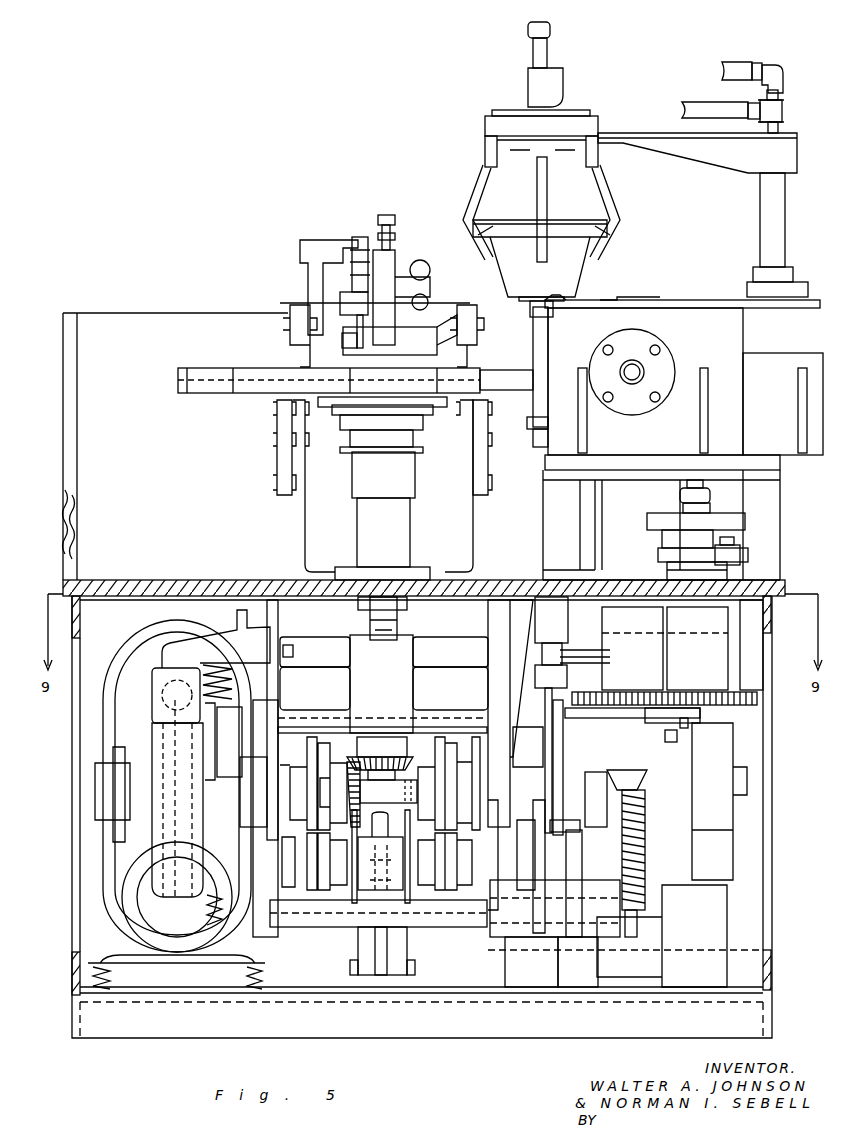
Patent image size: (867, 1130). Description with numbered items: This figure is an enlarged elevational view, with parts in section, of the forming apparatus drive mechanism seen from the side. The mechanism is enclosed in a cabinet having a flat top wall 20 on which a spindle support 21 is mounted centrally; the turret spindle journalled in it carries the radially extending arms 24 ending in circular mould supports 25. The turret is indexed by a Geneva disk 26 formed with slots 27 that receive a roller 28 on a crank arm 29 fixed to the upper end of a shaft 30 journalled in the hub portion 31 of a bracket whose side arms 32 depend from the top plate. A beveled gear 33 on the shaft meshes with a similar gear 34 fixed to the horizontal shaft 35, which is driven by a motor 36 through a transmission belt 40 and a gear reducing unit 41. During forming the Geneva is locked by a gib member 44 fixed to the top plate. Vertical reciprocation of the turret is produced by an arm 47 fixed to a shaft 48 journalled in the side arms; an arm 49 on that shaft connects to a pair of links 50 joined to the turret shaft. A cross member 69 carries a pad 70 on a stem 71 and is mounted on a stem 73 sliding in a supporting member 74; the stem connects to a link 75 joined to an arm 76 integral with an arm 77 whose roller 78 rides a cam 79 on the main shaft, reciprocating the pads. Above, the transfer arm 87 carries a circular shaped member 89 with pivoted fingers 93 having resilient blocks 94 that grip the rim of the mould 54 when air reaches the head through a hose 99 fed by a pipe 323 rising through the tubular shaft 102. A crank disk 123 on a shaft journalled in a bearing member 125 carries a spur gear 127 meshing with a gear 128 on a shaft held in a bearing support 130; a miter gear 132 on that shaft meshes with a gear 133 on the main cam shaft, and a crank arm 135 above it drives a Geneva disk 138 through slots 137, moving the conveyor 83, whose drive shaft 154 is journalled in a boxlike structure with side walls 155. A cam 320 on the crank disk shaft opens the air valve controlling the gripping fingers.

The top wall 20 is at (190, 586).
The spindle support 21 is at (382, 488).
The radially extending arms 24 is at (268, 365).
The circular mould supports 25 is at (178, 380).
The Geneva disk 26 is at (310, 702).
The slots 27 is at (330, 708).
The roller 28 is at (385, 640).
The crank arm 29 is at (370, 620).
The shaft 30 is at (390, 784).
The hub portion 31 is at (383, 684).
The side arms 32 is at (272, 621).
The beveled gear 33 is at (380, 758).
The gear 34 is at (361, 799).
The shaft 35 is at (280, 795).
The motor 36 is at (177, 897).
The transmission belt 40 is at (120, 845).
The gear reducing unit 41 is at (152, 730).
The gib member 44 is at (293, 651).
The arm 47 is at (540, 870).
The shaft 48 is at (378, 913).
The arm 49 is at (390, 947).
The links 50 is at (358, 938).
The mould 54 is at (578, 268).
The cross member 69 is at (530, 433).
The pad 70 is at (528, 298).
The stem 71 is at (533, 345).
The stem 73 is at (590, 655).
The supporting member 74 is at (551, 642).
The link 75 is at (548, 690).
The arm 76 is at (555, 935).
The arm 77 is at (582, 870).
The roller 78 is at (580, 825).
The cam 79 is at (563, 742).
The conveyor 83 is at (680, 298).
The arm 87 is at (697, 153).
The circular shaped member 89 is at (485, 127).
The fingers 93 is at (480, 187).
The blocks 94 is at (480, 223).
The hose 99 is at (740, 64).
The tubular shaft 102 is at (760, 212).
The crank disk 123 is at (652, 515).
The bearing member 125 is at (697, 648).
The spur gear 127 is at (752, 690).
The gear 128 is at (606, 698).
The bearing support 130 is at (665, 648).
The miter gear 132 is at (648, 770).
The gear 133 is at (605, 772).
The crank arm 135 is at (657, 728).
The slots 137 is at (692, 718).
The Geneva disk 138 is at (695, 716).
The shaft 154 is at (648, 370).
The side walls 155 is at (684, 389).
The cam 320 is at (742, 548).
The pipe 323 is at (783, 125).